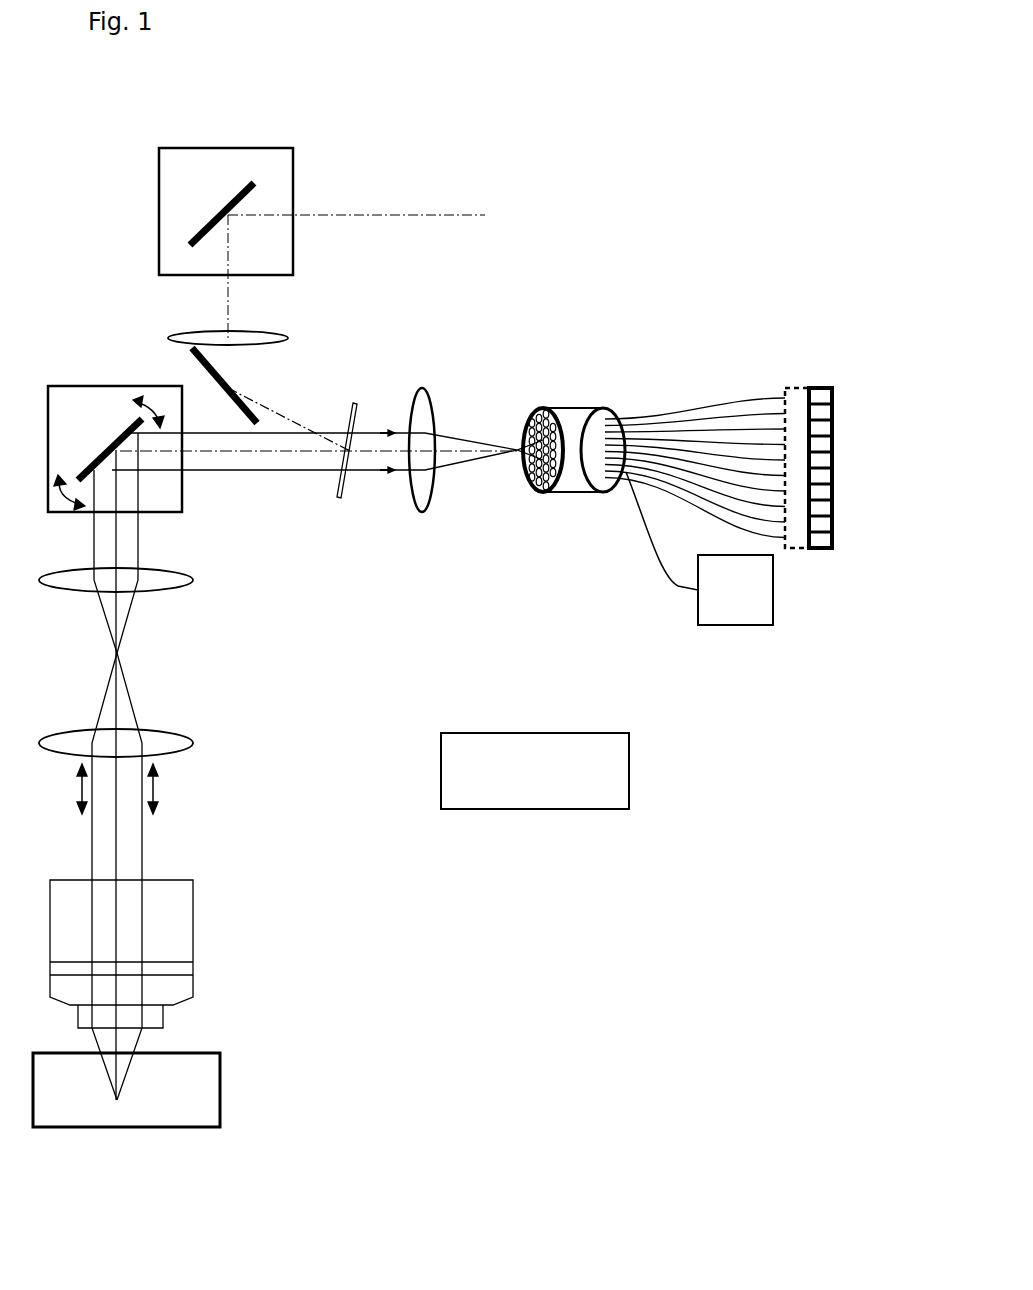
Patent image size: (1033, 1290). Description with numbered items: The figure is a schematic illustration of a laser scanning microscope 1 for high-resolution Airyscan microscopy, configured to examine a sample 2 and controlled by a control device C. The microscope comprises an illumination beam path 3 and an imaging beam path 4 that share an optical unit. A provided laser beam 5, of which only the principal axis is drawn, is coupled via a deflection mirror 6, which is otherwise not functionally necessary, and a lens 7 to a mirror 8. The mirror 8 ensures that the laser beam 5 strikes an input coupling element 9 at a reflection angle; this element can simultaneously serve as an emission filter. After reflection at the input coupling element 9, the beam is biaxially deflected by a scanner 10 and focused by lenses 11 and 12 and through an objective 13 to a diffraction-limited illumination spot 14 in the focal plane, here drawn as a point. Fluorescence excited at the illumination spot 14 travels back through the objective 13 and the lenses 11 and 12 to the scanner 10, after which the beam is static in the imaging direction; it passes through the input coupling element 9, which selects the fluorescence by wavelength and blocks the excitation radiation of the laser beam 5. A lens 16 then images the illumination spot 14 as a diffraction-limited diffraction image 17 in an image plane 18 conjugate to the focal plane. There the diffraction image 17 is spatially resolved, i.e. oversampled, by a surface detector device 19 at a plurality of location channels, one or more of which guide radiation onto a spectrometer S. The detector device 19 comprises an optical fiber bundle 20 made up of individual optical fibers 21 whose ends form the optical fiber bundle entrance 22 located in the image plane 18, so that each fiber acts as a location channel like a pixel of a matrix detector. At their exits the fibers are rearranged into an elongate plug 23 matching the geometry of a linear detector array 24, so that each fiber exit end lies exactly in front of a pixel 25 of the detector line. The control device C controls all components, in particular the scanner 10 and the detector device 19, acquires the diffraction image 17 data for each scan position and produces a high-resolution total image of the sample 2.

The laser scanning microscope 1 is at (506, 965).
The sample 2 is at (205, 1082).
The illumination beam path 3 is at (104, 246).
The imaging beam path 4 is at (506, 562).
The laser beam 5 is at (415, 213).
The deflection mirror 6 is at (193, 148).
The lens 7 is at (283, 338).
The mirror 8 is at (197, 362).
The input coupling element 9 is at (340, 495).
The scanner 10 is at (170, 505).
The lens 11 is at (190, 585).
The lens 12 is at (190, 748).
The objective 13 is at (193, 978).
The illumination spot 14 is at (117, 1100).
The lens 16 is at (422, 388).
The diffraction image 17 is at (515, 445).
The image plane 18 is at (540, 492).
The detector device 19 is at (663, 378).
The optical fiber bundle 20 is at (718, 462).
The optical fibers 21 is at (705, 398).
The optical fiber bundle entrance 22 is at (527, 477).
The plug 23 is at (790, 397).
The detector array 24 is at (832, 548).
The pixel 25 is at (818, 400).
The spectrometer S is at (760, 607).
The control device C is at (615, 763).